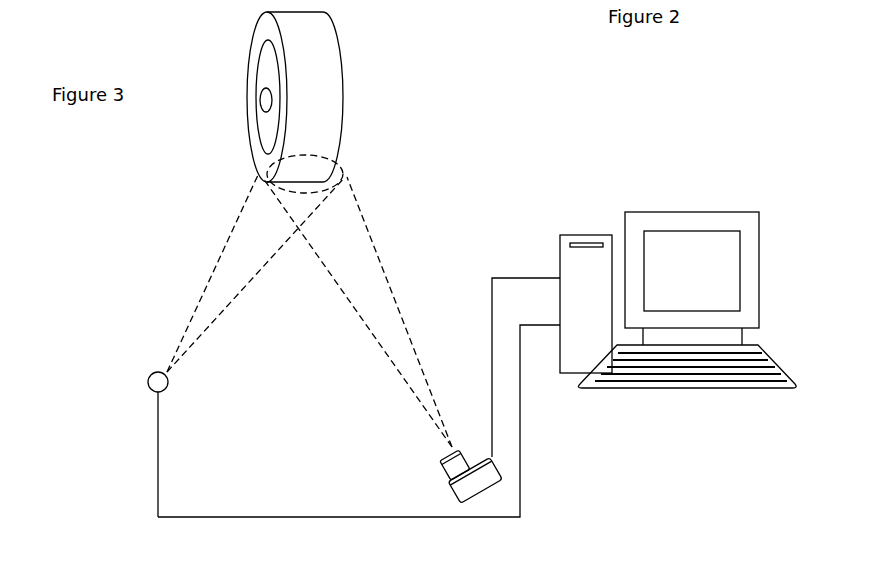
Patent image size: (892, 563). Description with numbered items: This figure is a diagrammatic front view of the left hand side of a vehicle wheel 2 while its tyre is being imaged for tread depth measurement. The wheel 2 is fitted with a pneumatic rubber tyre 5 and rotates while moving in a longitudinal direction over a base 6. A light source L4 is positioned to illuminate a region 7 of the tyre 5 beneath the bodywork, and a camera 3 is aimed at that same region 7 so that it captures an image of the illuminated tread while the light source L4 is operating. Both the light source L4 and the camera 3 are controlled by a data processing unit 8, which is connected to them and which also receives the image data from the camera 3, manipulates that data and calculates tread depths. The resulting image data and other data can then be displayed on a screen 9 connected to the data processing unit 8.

The wheel 2 is at (268, 97).
The camera 3 is at (458, 472).
The pneumatic rubber tyre 5 is at (345, 97).
The base 6 is at (529, 15).
The region of the tyre 7 is at (317, 168).
The data processing unit 8 is at (585, 268).
The screen 9 is at (708, 258).
The light source L4 is at (157, 372).